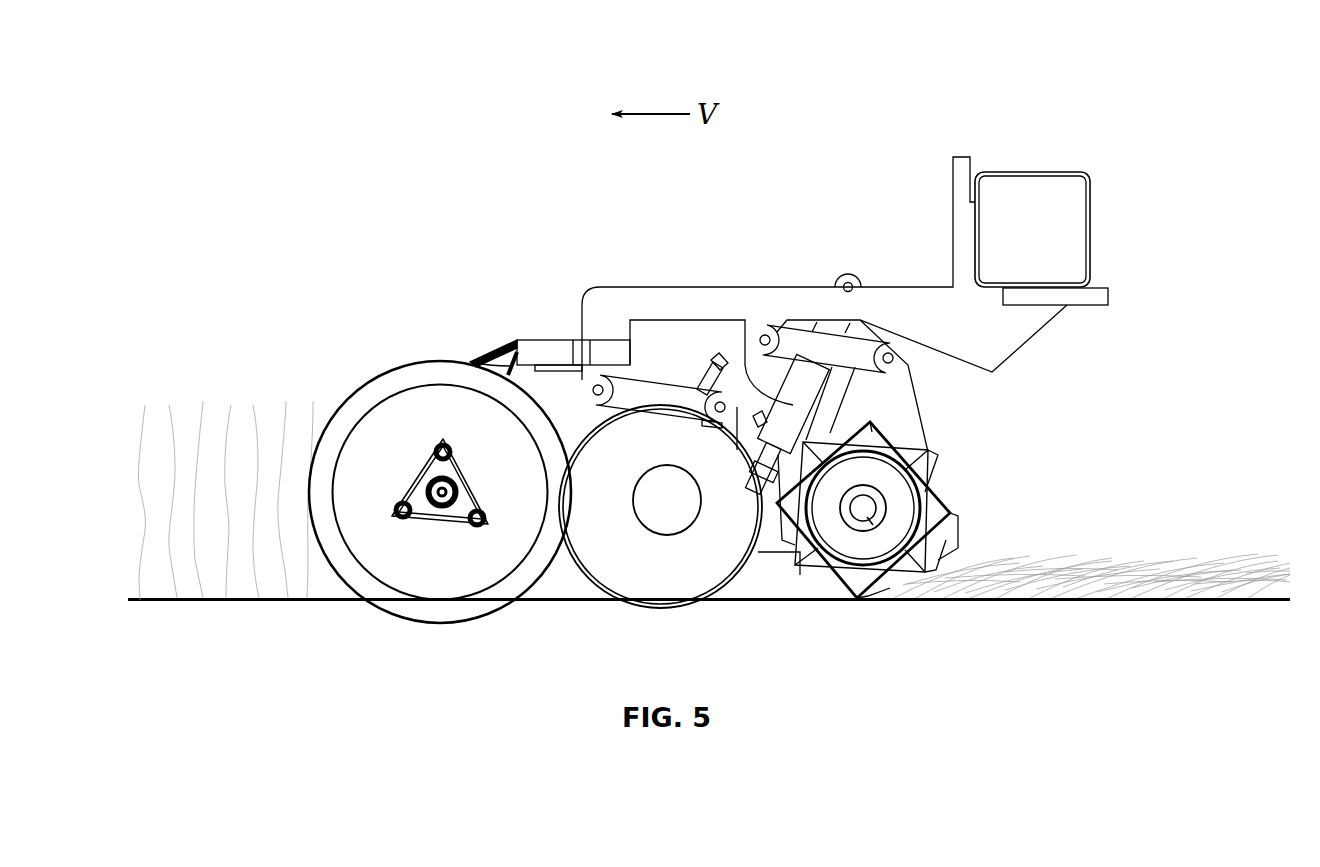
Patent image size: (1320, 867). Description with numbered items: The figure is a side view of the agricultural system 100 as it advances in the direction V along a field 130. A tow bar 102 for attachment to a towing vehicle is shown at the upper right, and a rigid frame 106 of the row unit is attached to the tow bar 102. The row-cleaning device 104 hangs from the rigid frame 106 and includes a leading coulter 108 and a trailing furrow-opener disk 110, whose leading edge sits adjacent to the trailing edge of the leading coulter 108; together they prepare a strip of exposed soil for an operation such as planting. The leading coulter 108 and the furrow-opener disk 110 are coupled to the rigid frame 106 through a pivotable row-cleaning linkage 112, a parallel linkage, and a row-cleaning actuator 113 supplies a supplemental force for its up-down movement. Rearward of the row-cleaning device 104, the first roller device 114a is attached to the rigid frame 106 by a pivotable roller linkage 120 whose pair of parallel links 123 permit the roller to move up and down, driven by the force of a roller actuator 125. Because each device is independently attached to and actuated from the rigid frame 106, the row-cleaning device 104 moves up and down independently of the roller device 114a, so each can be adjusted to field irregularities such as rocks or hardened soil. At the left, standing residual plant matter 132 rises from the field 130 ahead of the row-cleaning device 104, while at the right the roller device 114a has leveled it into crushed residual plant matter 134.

The agricultural system 100 is at (1142, 101).
The tow bar 102 is at (1090, 213).
The row-cleaning device 104 is at (494, 316).
The rigid frame 106 is at (920, 295).
The leading coulter 108 is at (388, 420).
The furrow-opener disk 110 is at (633, 567).
The row-cleaning linkage 112 is at (660, 398).
The row-cleaning actuator 113 is at (708, 373).
The first roller device 114a is at (922, 462).
The roller linkage 120 is at (835, 345).
The parallel links 123 is at (898, 403).
The roller actuator 125 is at (790, 403).
The field 130 is at (184, 603).
The standing residual plant matter 132 is at (182, 396).
The crushed residual plant matter 134 is at (1156, 552).